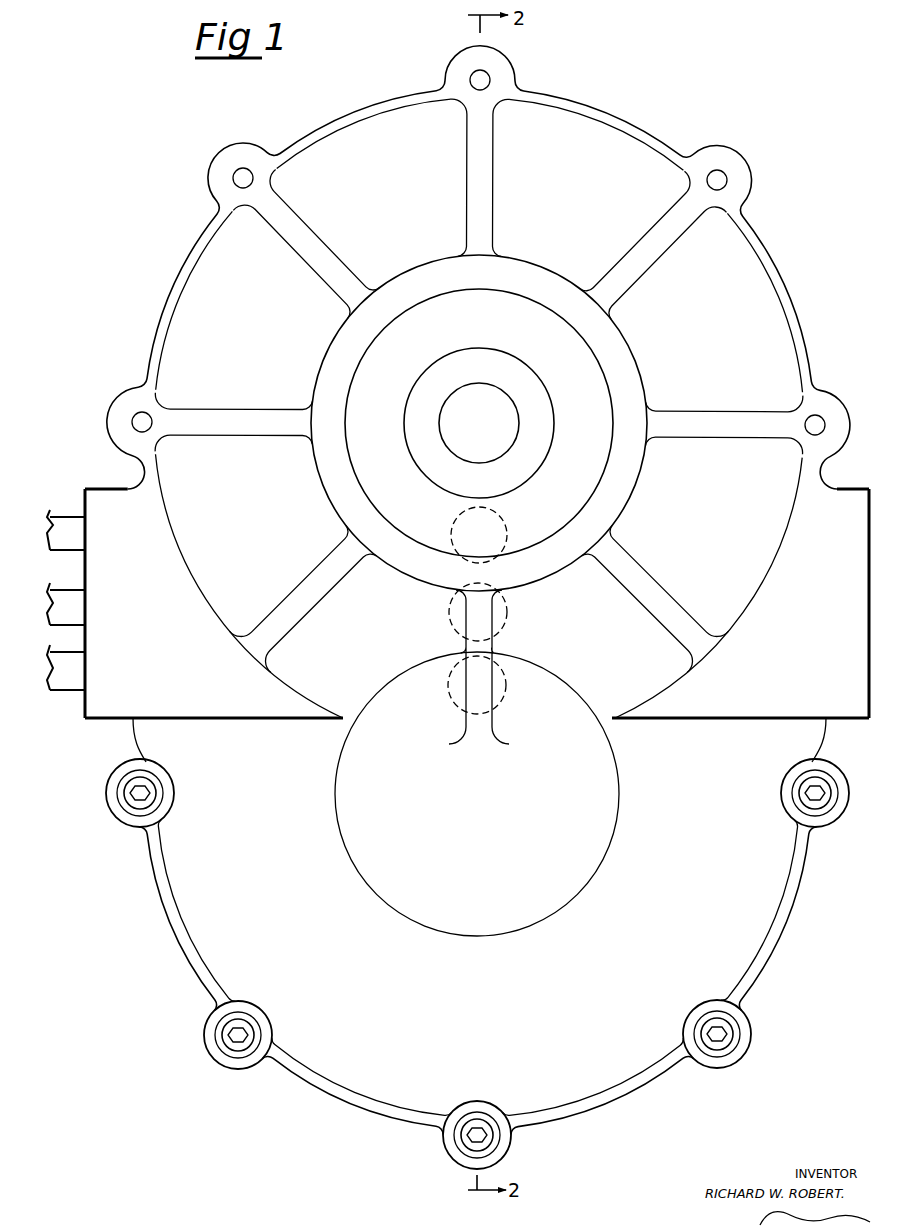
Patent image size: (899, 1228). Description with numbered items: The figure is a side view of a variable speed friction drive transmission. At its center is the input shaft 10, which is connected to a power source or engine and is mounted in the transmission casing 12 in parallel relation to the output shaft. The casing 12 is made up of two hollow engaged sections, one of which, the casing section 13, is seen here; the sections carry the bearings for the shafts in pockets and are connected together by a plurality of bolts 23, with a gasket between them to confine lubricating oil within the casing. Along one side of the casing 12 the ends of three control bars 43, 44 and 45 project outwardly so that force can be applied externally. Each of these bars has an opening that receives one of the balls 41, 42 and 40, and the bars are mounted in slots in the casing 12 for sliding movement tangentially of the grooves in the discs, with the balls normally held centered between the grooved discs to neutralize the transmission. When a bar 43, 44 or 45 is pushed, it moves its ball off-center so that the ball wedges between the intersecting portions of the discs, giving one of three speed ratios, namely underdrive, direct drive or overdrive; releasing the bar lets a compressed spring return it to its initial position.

The input shaft 10 is at (512, 408).
The transmission casing 12 is at (666, 127).
The casing section 13 is at (760, 272).
The bolts 23 is at (238, 180).
The ball 40 is at (506, 693).
The ball 41 is at (505, 520).
The ball 42 is at (507, 613).
The control bar 43 is at (62, 514).
The control bar 44 is at (61, 593).
The control bar 45 is at (61, 688).